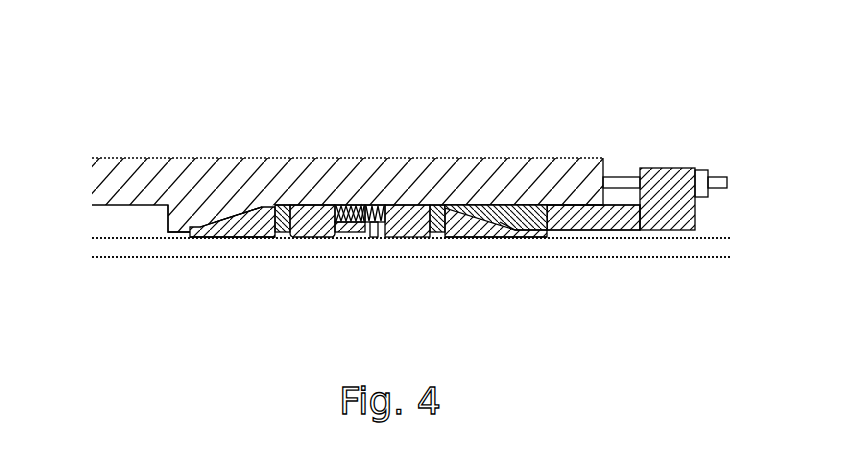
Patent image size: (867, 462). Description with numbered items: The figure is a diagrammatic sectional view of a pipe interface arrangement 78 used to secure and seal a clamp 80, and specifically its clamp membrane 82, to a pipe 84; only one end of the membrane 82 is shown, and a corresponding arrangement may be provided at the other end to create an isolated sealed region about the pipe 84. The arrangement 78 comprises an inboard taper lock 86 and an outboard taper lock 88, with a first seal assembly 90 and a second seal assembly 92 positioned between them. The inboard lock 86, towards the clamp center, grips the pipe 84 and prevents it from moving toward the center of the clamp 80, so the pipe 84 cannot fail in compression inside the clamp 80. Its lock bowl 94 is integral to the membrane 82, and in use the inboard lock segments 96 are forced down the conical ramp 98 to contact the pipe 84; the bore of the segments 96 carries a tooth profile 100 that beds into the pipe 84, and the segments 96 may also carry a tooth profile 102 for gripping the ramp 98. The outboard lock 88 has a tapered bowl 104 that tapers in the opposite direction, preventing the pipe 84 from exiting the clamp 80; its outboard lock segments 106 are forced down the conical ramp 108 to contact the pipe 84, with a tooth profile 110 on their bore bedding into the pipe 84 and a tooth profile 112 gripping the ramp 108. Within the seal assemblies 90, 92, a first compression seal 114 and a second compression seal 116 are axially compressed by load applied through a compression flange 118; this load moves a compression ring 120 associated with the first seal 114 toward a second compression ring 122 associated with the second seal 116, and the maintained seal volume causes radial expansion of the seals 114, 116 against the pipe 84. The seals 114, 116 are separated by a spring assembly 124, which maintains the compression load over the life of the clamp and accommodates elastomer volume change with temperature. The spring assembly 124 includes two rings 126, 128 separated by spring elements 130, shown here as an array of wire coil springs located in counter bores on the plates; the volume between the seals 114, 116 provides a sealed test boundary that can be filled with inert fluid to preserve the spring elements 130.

The pipe interface arrangement 78 is at (357, 60).
The clamp 80 is at (108, 143).
The clamp membrane 82 is at (175, 167).
The pipe 84 is at (117, 250).
The inboard taper lock 86 is at (245, 143).
The outboard taper lock 88 is at (490, 112).
The seal assembly 90 is at (300, 118).
The seal assembly 92 is at (428, 90).
The lock bowl 94 is at (182, 218).
The inboard lock segments 96 is at (262, 217).
The conical ramp 98 is at (217, 228).
The tooth profile 100 is at (222, 256).
The tooth profile 102 is at (232, 218).
The tapered bowl 104 is at (548, 205).
The outboard lock segments 106 is at (497, 237).
The conical ramp 108 is at (550, 208).
The tooth profile 110 is at (480, 238).
The tooth profile 112 is at (518, 238).
The compression seal 114 is at (410, 238).
The compression seal 116 is at (315, 238).
The compression flange 118 is at (685, 230).
The compression ring 120 is at (490, 205).
The second compression ring 122 is at (285, 205).
The spring assembly 124 is at (358, 243).
The ring 126 is at (358, 205).
The ring 128 is at (378, 228).
The spring elements 130 is at (383, 205).